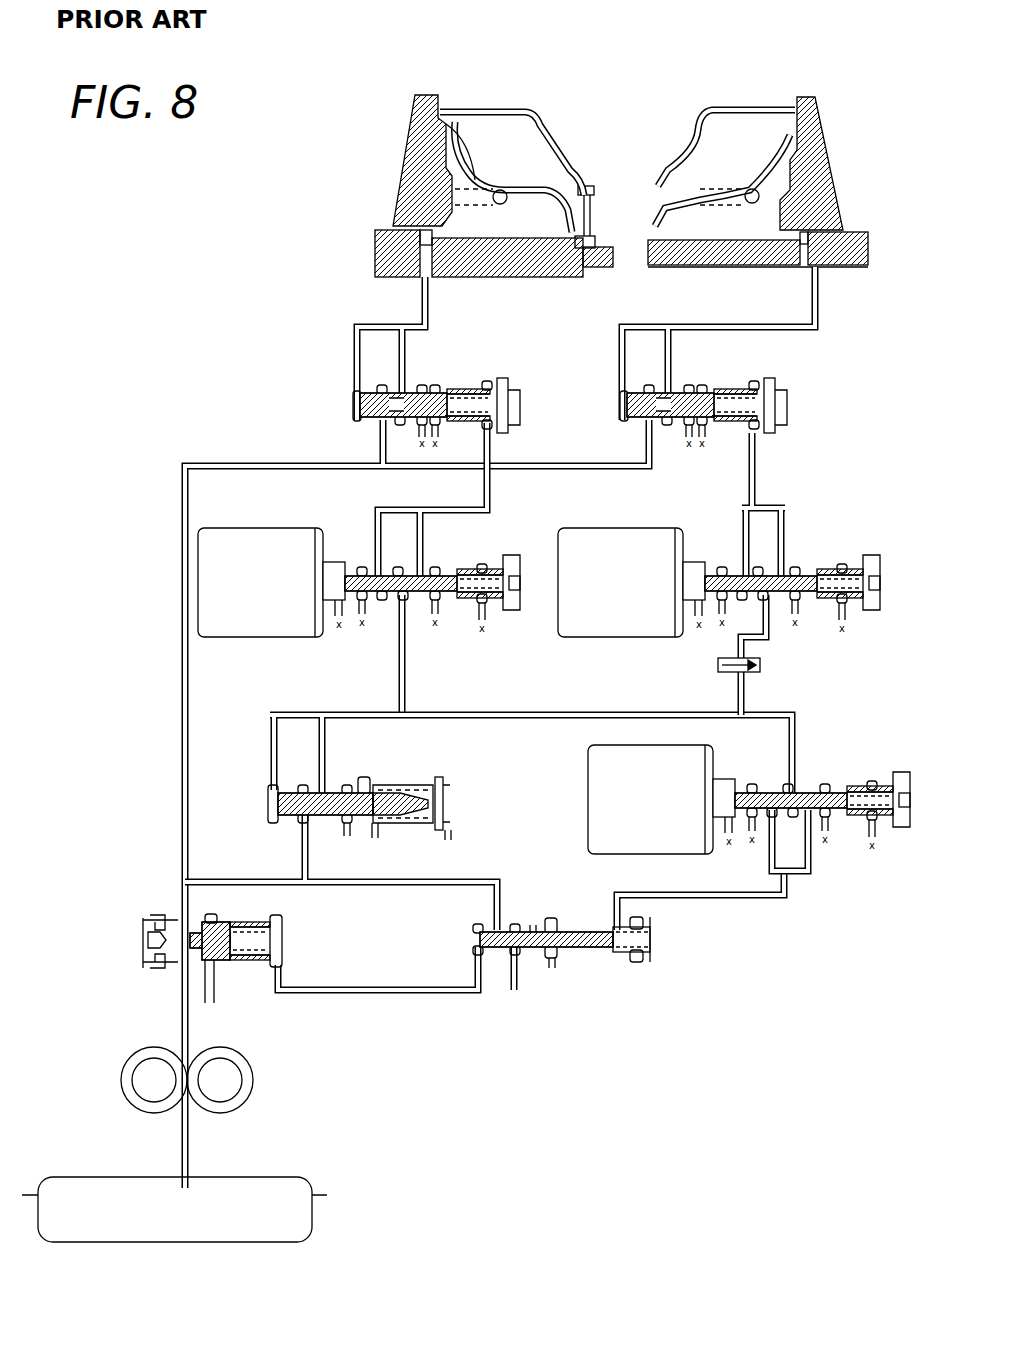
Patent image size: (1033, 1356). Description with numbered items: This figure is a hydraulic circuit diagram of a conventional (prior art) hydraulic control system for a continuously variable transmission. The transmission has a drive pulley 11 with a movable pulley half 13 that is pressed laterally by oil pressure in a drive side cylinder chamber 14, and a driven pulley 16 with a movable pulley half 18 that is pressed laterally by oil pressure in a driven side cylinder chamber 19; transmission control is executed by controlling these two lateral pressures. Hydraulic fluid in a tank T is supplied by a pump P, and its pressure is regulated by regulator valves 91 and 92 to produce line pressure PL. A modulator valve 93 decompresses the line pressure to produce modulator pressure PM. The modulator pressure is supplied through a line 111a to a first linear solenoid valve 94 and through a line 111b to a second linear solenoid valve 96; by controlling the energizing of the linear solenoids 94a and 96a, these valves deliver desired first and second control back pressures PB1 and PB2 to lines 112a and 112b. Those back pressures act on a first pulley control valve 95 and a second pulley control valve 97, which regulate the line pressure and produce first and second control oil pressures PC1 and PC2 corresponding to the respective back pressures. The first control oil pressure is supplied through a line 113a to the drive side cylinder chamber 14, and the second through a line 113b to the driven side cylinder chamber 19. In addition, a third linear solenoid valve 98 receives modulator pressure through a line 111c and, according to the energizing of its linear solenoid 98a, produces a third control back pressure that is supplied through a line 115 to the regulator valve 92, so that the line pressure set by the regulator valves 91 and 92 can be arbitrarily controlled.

The drive pulley 11 is at (848, 133).
The movable pulley half 13 is at (818, 158).
The drive side cylinder chamber 14 is at (765, 178).
The driven pulley 16 is at (568, 126).
The movable pulley half 18 is at (418, 178).
The driven side cylinder chamber 19 is at (470, 168).
The regulator valve 91 is at (238, 983).
The regulator valve 92 is at (575, 965).
The modulator valve 93 is at (424, 784).
The first linear solenoid valve 94 is at (810, 543).
The linear solenoid 94a is at (647, 593).
The first pulley control valve 95 is at (795, 380).
The second linear solenoid valve 96 is at (452, 558).
The linear solenoid 96a is at (287, 593).
The second pulley control valve 97 is at (500, 378).
The third linear solenoid valve 98 is at (824, 847).
The linear solenoid 98a is at (667, 811).
The line 111a is at (737, 690).
The line 111b is at (400, 667).
The line 111c is at (797, 718).
The line 112a is at (762, 470).
The line 112b is at (490, 494).
The line 113a is at (820, 300).
The line 113b is at (432, 308).
The line 115 is at (740, 900).
The pump P is at (253, 1080).
The tank T is at (315, 1200).